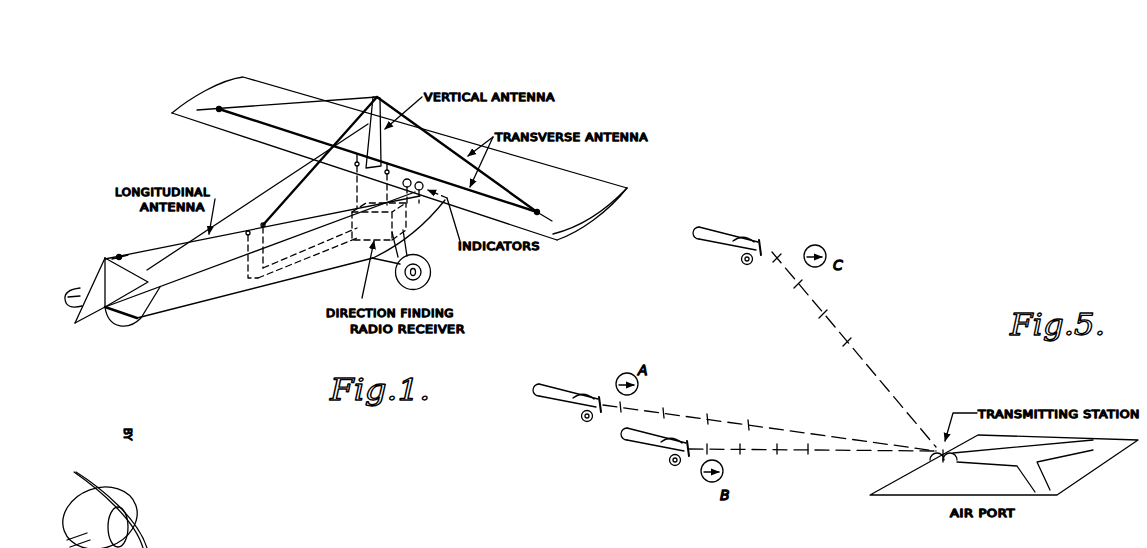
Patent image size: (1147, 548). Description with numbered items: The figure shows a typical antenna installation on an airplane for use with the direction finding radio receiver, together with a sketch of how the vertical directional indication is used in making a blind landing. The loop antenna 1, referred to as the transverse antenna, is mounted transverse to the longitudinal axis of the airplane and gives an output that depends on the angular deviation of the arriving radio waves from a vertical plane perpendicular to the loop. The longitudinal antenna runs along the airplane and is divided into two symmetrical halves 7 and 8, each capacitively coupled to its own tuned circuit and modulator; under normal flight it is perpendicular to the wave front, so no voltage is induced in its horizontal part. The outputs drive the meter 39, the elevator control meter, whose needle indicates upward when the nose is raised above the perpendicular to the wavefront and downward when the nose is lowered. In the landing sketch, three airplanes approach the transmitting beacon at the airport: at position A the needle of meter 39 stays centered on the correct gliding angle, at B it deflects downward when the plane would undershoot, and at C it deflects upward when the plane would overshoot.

In FIG. 1, the loop antenna 1 is at (438, 136).
In FIG. 1, the longitudinal antenna half 7 is at (313, 152).
In FIG. 1, the longitudinal antenna half 8 is at (143, 250).
In FIG. 5, the meter 39 is at (638, 384).